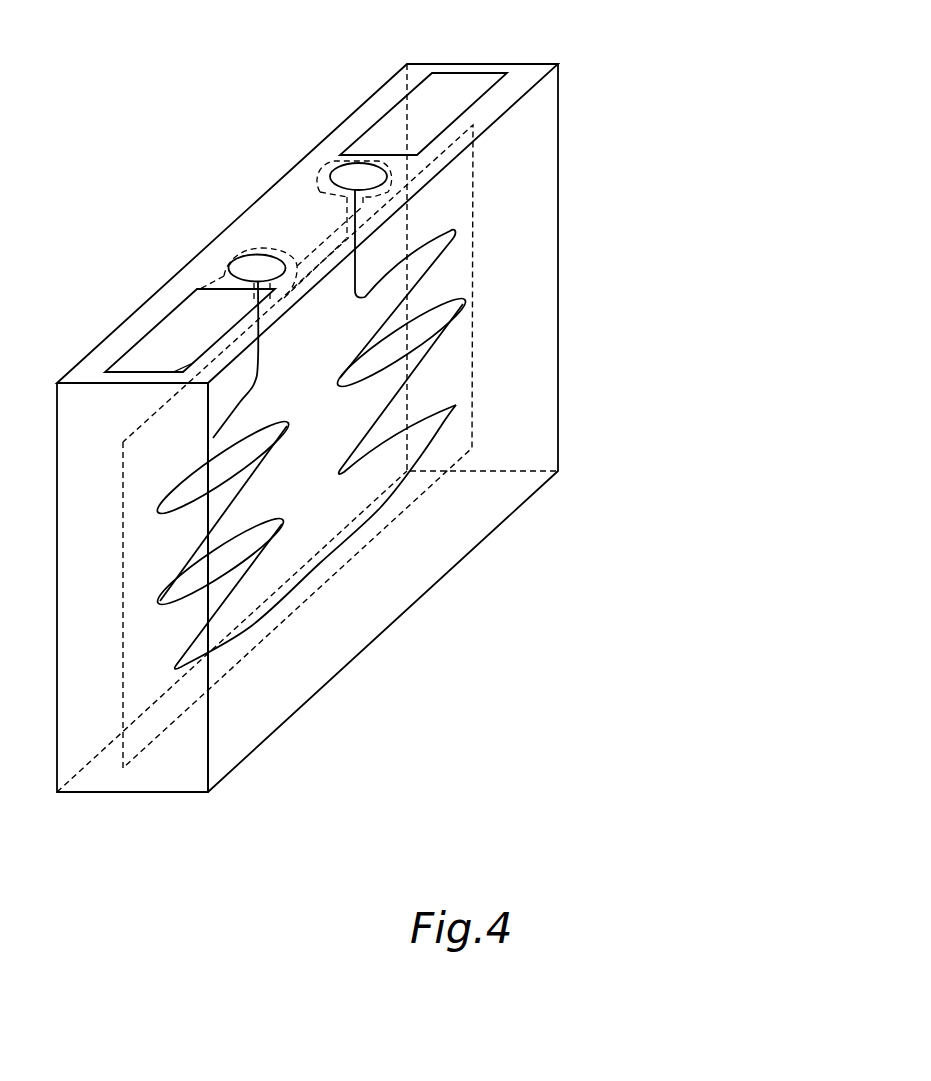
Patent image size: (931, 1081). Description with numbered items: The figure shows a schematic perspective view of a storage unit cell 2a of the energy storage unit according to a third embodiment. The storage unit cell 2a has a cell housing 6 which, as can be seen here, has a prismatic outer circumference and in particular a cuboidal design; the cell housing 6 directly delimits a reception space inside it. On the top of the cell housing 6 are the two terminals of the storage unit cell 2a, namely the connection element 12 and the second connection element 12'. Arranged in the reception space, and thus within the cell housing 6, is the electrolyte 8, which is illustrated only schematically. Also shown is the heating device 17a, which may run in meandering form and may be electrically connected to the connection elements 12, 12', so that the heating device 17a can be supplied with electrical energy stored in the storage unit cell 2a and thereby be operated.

The cell housing 6 is at (183, 793).
The storage unit cell 2a is at (520, 70).
The connection element 12 is at (226, 356).
The second connection element 12' is at (418, 165).
The electrolyte 8 is at (380, 429).
The heating device 17a is at (258, 558).